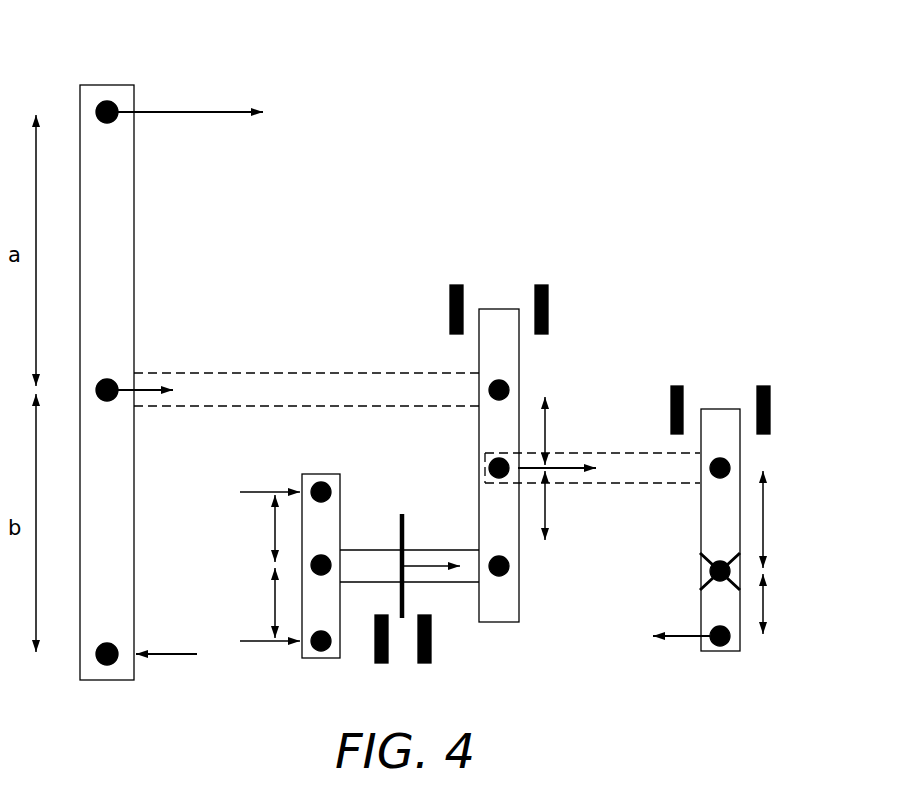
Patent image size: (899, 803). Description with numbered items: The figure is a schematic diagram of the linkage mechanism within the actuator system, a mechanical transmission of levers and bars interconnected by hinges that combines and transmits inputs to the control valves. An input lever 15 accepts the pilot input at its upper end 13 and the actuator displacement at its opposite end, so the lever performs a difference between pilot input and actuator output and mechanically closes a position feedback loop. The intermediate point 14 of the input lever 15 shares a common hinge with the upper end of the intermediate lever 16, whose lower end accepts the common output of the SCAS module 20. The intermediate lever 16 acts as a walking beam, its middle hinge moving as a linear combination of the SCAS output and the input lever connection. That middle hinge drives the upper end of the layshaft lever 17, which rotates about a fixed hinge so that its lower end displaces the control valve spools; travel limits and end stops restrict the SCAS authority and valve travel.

The upper end of the input lever 13 is at (154, 66).
The intermediate point of the input lever 14 is at (108, 378).
The input lever 15 is at (134, 207).
The intermediate lever 16 is at (498, 308).
The layshaft lever 17 is at (719, 408).
The SCAS module 20 is at (522, 665).